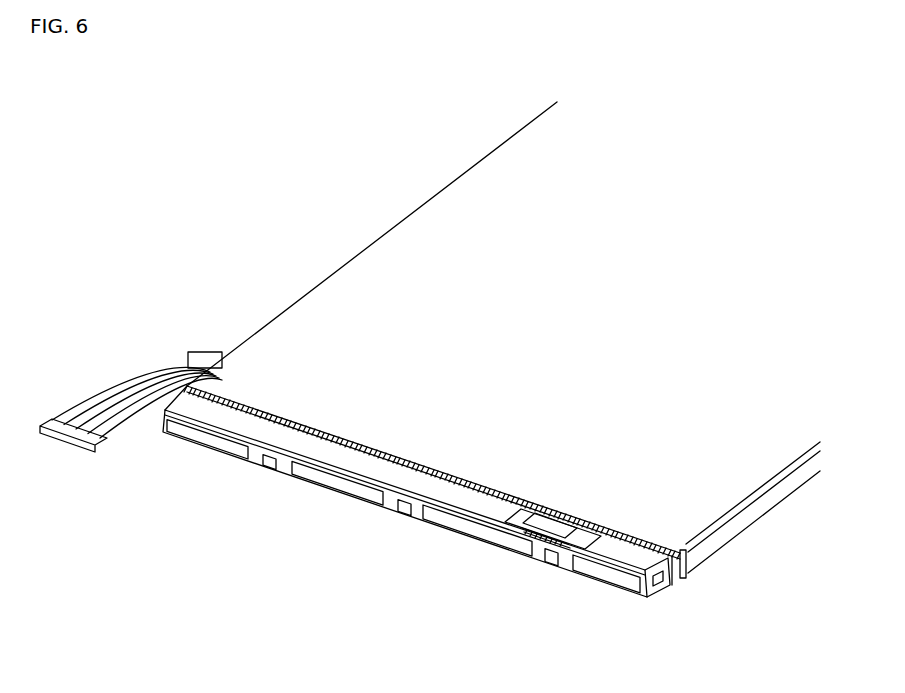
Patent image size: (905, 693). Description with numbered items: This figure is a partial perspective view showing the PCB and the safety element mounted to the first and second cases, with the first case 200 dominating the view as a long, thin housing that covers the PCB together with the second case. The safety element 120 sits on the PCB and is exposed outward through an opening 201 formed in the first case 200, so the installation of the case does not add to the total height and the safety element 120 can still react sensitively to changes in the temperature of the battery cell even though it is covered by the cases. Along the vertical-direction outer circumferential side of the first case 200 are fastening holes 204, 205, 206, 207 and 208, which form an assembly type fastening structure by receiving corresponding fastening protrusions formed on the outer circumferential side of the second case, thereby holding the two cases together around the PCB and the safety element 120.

The first case 200 is at (358, 443).
The safety element 120 is at (563, 513).
The opening 201 is at (610, 530).
The fastening hole 204 is at (268, 466).
The fastening hole 205 is at (403, 510).
The fastening hole 206 is at (548, 558).
The fastening hole 207 is at (660, 580).
The fastening hole 208 is at (163, 416).